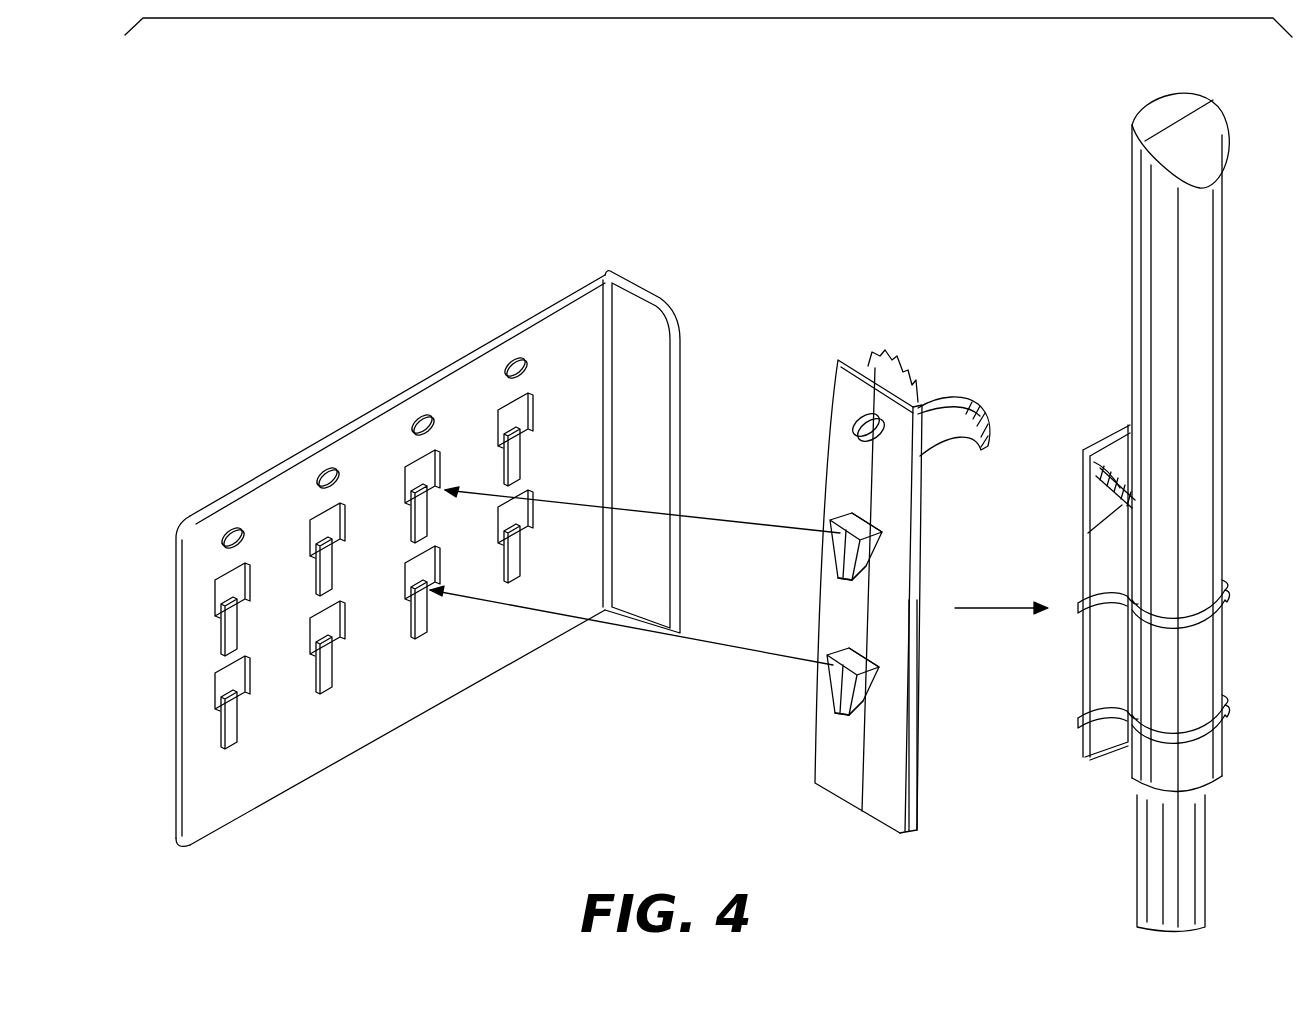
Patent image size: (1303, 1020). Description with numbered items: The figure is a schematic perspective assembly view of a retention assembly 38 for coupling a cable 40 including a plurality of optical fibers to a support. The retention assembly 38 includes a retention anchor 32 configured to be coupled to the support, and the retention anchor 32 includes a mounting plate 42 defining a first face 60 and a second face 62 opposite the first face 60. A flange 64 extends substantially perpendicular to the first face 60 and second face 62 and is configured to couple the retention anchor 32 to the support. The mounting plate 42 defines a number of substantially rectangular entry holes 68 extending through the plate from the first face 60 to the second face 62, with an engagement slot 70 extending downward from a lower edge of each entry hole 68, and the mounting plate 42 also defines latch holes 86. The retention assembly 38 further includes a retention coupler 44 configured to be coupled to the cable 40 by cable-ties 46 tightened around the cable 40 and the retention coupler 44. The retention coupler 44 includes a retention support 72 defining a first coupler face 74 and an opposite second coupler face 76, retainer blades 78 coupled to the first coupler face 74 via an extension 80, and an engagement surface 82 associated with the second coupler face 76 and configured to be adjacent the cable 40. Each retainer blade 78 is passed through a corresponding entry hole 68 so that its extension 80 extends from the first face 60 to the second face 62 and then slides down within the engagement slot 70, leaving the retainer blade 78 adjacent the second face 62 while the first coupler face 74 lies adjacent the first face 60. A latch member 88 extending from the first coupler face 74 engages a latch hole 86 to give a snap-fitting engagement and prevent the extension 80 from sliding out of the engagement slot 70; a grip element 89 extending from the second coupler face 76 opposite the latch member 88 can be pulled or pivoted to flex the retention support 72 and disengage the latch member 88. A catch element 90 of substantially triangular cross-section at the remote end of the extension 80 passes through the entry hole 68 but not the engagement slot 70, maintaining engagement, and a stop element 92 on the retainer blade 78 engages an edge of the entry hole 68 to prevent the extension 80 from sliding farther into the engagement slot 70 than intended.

The retention anchor 32 is at (400, 364).
The retention assembly 38 is at (694, 118).
The cable 40 is at (1200, 342).
The mounting plate 42 is at (304, 468).
The retention coupler 44 is at (838, 436).
The cable-tie 46 is at (1228, 598).
The first face 60 is at (284, 766).
The second face 62 is at (174, 597).
The flange 64 is at (633, 314).
The entry hole 68 is at (397, 550).
The engagement slot 70 is at (395, 588).
The retention support 72 is at (914, 528).
The first coupler face 74 is at (834, 608).
The second coupler face 76 is at (924, 548).
The retainer blade 78 is at (830, 544).
The extension 80 is at (872, 566).
The engagement surface 82 is at (922, 696).
The latch hole 86 is at (396, 436).
The latch member 88 is at (854, 420).
The grip element 89 is at (978, 404).
The catch element 90 is at (846, 530).
The stop element 92 is at (868, 534).